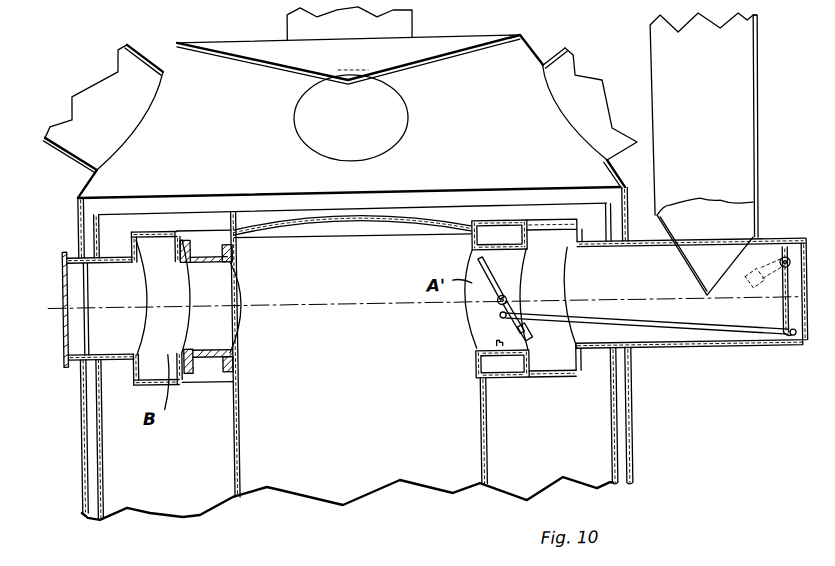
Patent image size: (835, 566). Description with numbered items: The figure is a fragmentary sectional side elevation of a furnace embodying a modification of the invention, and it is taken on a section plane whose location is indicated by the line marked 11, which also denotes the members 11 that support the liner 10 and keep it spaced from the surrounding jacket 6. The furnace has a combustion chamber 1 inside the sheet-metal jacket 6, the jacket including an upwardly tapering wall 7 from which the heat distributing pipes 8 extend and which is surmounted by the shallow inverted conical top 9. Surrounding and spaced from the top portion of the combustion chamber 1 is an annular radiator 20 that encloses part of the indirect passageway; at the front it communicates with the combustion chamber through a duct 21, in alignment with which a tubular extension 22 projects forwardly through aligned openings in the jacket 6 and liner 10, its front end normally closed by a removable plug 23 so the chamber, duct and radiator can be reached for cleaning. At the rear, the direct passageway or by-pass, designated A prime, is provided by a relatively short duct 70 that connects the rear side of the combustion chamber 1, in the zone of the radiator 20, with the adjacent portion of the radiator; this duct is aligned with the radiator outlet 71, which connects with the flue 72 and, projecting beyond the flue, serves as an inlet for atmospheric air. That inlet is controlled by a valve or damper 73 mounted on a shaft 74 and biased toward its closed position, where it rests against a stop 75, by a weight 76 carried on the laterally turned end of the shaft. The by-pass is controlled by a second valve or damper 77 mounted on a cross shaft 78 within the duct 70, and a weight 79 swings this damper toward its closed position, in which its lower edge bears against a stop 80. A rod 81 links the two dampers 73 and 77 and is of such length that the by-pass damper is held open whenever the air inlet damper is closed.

The combustion chamber 1 is at (480, 424).
The jacket 6 is at (631, 426).
The upwardly tapering wall 7 is at (620, 172).
The heat distributing pipes 8 is at (82, 140).
The inverted conical top 9 is at (422, 57).
The liner 10 is at (606, 462).
The members 11 is at (50, 303).
The annular radiator 20 is at (158, 229).
The duct 21 is at (217, 270).
The tubular extension 22 is at (114, 258).
The removable plug 23 is at (63, 262).
The duct 70 is at (496, 244).
The radiator outlet 71 is at (594, 258).
The flue 72 is at (706, 154).
The valve or damper 73 is at (792, 278).
The shaft 74 is at (783, 264).
The stop 75 is at (796, 347).
The weight 76 is at (747, 274).
The valve or damper 77 is at (493, 272).
The cross shaft 78 is at (505, 297).
The weight 79 is at (530, 337).
The stop 80 is at (496, 345).
The rod 81 is at (647, 324).